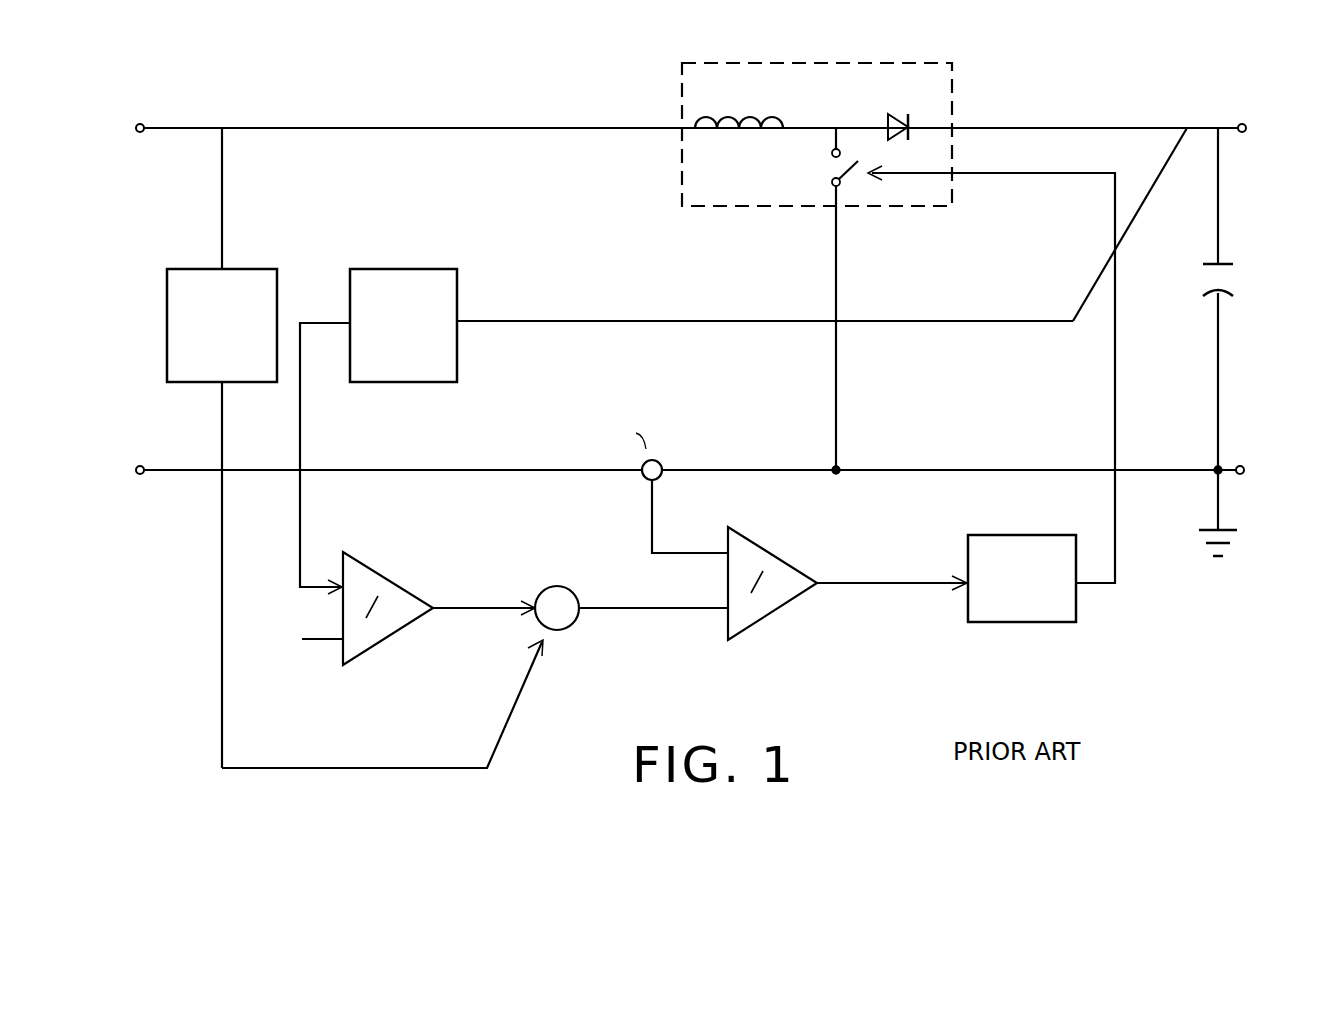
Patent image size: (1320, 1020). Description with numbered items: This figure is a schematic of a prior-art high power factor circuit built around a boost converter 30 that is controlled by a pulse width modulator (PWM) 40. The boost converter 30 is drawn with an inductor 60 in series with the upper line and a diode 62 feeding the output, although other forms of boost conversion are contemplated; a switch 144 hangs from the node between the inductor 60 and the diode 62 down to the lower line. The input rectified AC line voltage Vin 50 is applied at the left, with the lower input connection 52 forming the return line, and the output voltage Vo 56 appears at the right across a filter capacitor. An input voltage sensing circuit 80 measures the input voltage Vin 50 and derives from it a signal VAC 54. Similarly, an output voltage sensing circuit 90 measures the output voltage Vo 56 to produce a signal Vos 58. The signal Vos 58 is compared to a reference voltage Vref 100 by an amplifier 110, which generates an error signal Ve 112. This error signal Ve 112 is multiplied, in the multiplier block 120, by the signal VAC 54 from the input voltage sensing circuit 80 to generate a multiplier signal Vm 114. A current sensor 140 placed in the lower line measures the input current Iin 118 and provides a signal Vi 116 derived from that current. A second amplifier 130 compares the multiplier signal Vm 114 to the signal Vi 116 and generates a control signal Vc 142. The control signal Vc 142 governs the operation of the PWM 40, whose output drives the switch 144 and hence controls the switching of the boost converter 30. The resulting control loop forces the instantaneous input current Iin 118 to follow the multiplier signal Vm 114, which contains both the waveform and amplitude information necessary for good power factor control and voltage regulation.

The boost converter 30 is at (952, 65).
The pulse width modulator 40 is at (1078, 612).
The input rectified AC line voltage 50 is at (160, 90).
The input return terminal 52 is at (140, 477).
The signal VAC 54 is at (325, 770).
The output voltage 56 is at (1256, 108).
The signal Vos 58 is at (303, 527).
The inductor 60 is at (718, 133).
The diode 62 is at (914, 118).
The input voltage sensing circuit 80 is at (241, 268).
The output voltage sensing circuit 90 is at (459, 283).
The reference voltage 100 is at (278, 663).
The amplifier 110 is at (372, 656).
The error signal 112 is at (452, 612).
The multiplier signal 114 is at (632, 612).
The current sense voltage signal line 116 is at (690, 568).
The input current 118 is at (636, 414).
The multiplier 120 is at (559, 632).
The amplifier 130 is at (765, 622).
The current sensor 140 is at (662, 478).
The control signal 142 is at (880, 545).
The switch 144 is at (850, 180).